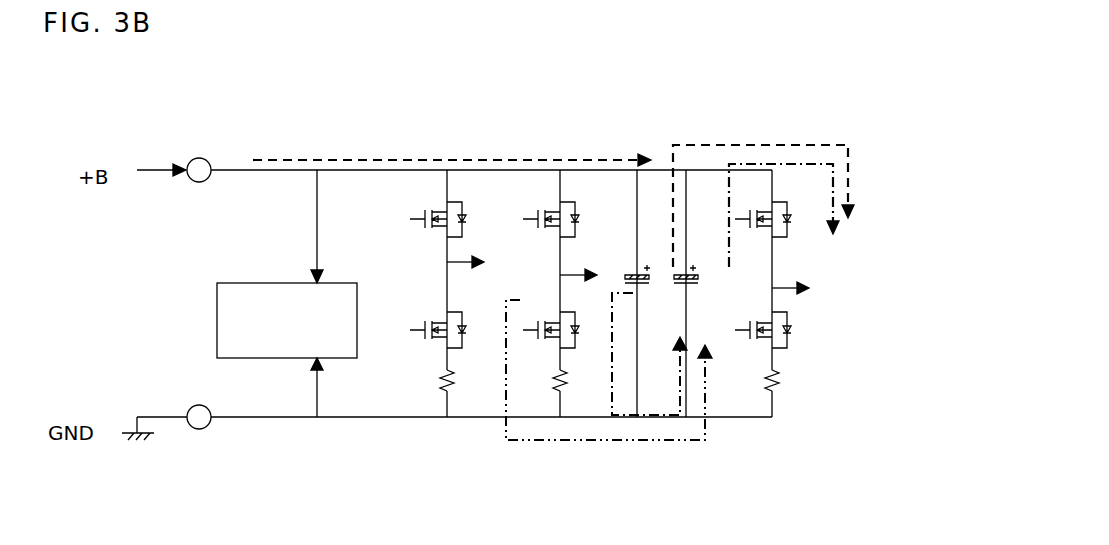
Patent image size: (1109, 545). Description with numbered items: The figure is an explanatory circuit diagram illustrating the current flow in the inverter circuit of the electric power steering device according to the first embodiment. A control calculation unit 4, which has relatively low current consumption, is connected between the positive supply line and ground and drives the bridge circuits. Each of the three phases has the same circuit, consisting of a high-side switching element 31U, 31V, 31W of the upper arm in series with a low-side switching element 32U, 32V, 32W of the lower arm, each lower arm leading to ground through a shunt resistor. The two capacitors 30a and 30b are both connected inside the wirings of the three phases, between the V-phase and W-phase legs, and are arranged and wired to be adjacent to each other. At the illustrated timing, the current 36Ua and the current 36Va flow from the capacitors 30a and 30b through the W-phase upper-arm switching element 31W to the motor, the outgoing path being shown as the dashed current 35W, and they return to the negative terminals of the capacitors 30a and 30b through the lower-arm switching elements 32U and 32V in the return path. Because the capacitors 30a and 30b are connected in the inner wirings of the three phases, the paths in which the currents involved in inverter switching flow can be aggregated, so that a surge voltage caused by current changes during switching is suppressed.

The control calculation unit 4 is at (217, 325).
The high-side switching element 31U is at (463, 199).
The high-side switching element 31V is at (575, 199).
The high-side switching element 31W is at (792, 198).
The low-side switching element 32U is at (440, 313).
The low-side switching element 32V is at (580, 345).
The low-side switching element 32W is at (823, 335).
The capacitor 30a is at (658, 247).
The capacitor 30b is at (697, 262).
The current 35W is at (827, 143).
The current 36Ua is at (688, 440).
The current 36Va is at (614, 420).